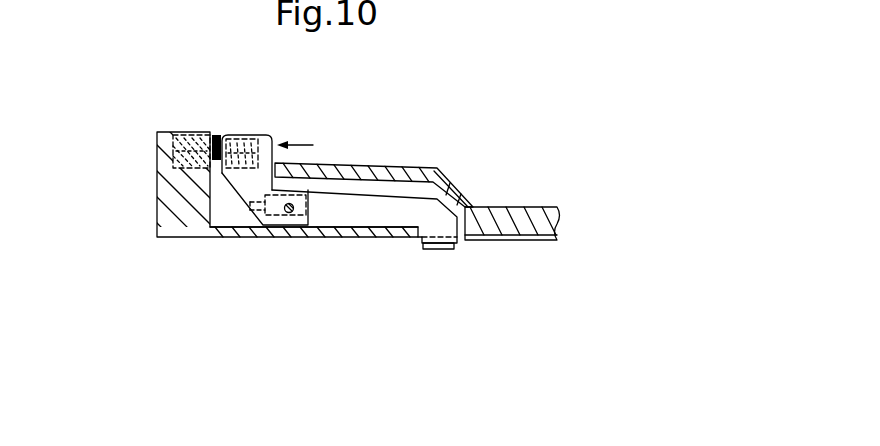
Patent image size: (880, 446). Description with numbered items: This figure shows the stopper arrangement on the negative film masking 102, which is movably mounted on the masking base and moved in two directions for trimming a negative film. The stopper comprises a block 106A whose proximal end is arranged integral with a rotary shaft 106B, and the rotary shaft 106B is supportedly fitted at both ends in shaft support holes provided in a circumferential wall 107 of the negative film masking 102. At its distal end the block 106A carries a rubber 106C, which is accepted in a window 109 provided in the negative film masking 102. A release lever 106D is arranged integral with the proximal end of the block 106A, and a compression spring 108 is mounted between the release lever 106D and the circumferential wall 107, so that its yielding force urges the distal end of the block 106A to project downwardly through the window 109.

The negative film masking 102 is at (507, 207).
The block 106A is at (349, 212).
The rotary shaft 106B is at (289, 208).
The rubber 106C is at (439, 250).
The release lever 106D is at (249, 135).
The circumferential wall 107 is at (157, 188).
The compression spring 108 is at (220, 146).
The window 109 is at (413, 240).